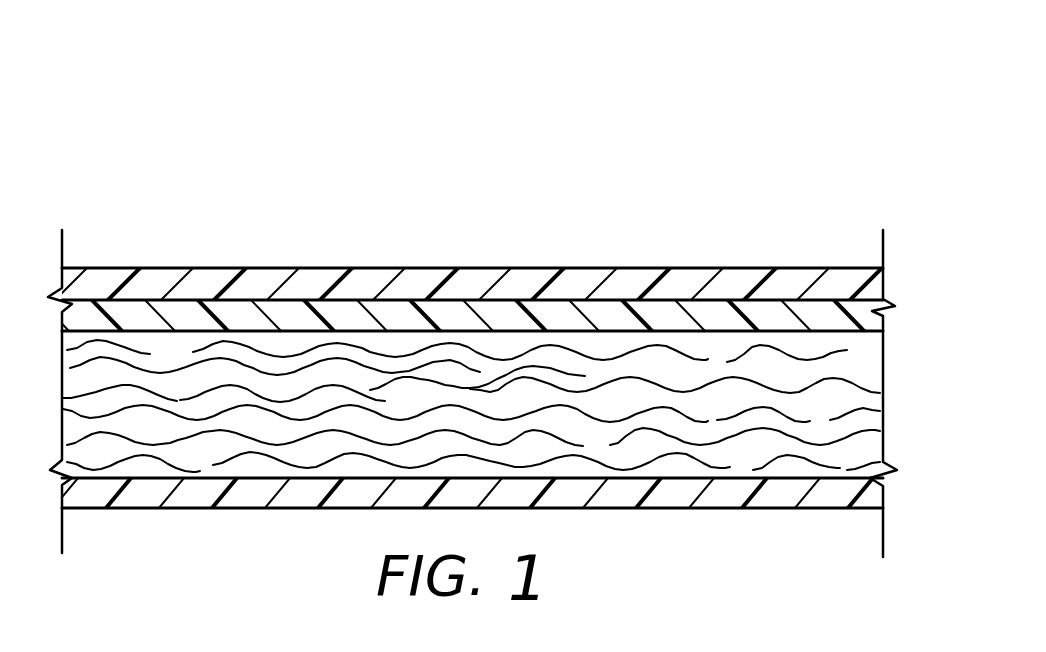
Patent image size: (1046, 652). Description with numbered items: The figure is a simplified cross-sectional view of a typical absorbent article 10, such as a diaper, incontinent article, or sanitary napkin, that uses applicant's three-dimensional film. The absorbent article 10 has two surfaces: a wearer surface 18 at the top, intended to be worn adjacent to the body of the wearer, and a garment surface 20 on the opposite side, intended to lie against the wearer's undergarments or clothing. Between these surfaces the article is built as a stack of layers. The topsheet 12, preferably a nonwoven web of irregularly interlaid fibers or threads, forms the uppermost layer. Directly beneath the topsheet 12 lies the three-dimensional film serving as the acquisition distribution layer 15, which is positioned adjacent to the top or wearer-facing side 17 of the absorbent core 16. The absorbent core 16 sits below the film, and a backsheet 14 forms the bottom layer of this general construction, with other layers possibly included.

The absorbent article 10 is at (412, 95).
The topsheet 12 is at (682, 284).
The backsheet 14 is at (251, 500).
The acquisition distribution layer 15 is at (403, 318).
The absorbent core 16 is at (873, 448).
The wearer-facing side of the absorbent core 17 is at (870, 335).
The wearer surface 18 is at (530, 233).
The garment surface 20 is at (694, 549).